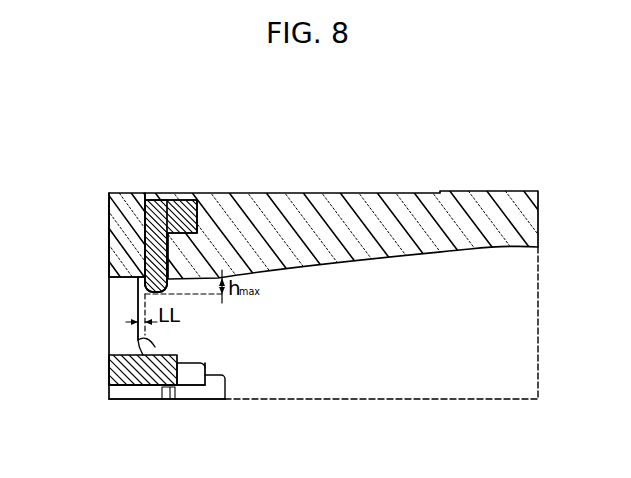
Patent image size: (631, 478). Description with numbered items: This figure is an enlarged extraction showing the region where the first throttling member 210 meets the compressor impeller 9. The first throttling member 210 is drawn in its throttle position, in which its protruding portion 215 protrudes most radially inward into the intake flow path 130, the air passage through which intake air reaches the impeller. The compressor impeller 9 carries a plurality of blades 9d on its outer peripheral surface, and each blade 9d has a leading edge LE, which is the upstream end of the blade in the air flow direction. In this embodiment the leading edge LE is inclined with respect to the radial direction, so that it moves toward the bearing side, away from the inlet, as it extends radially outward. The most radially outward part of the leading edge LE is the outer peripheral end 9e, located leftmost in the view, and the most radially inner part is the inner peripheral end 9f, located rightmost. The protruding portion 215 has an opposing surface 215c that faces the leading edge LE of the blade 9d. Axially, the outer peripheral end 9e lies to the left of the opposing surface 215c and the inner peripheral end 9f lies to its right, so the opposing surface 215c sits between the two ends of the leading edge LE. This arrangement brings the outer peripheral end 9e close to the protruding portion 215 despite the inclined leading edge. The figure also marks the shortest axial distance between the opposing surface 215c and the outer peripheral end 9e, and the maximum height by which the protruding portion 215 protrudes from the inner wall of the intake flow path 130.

The intake flow path 130 is at (432, 318).
The compressor impeller 9 is at (134, 334).
The outer peripheral end 9e is at (138, 276).
The blade 9d is at (138, 305).
The inner peripheral end 9f is at (140, 345).
The leading edge LE is at (123, 355).
The first throttling member 210 is at (158, 200).
The protruding portion 215 is at (145, 232).
The opposing surface 215c is at (145, 250).